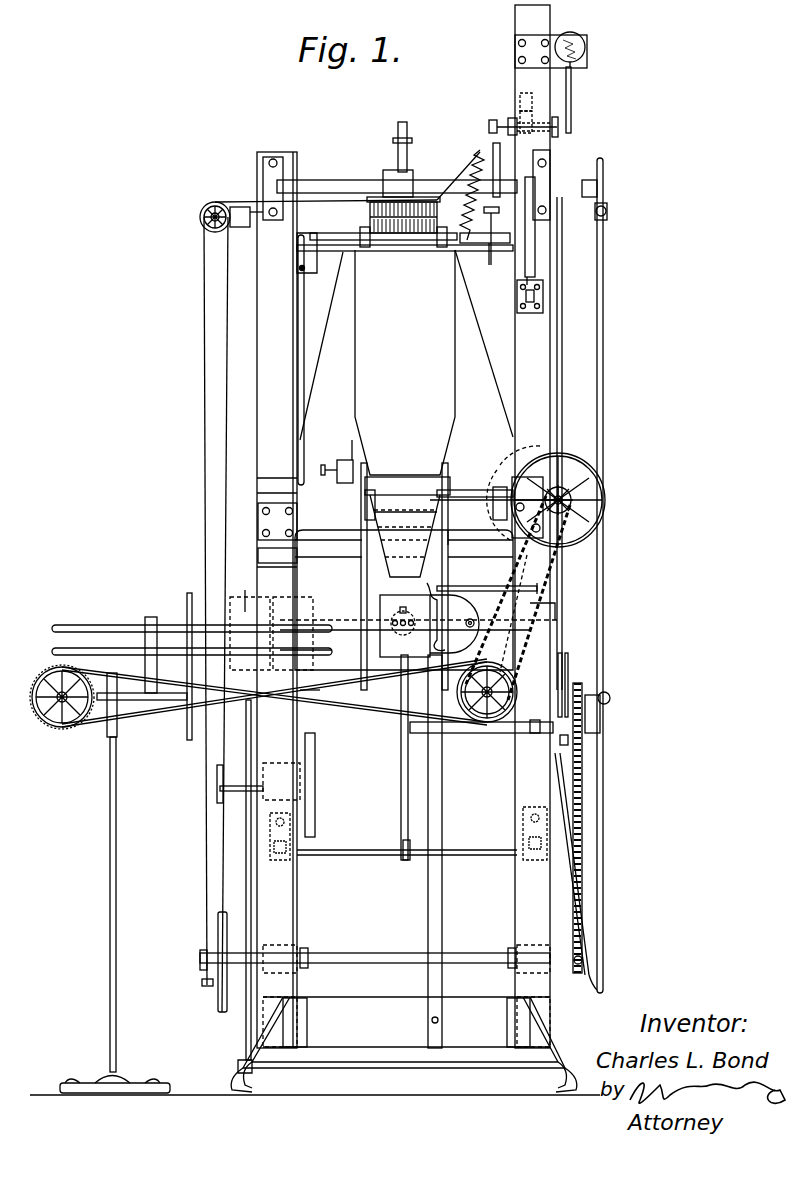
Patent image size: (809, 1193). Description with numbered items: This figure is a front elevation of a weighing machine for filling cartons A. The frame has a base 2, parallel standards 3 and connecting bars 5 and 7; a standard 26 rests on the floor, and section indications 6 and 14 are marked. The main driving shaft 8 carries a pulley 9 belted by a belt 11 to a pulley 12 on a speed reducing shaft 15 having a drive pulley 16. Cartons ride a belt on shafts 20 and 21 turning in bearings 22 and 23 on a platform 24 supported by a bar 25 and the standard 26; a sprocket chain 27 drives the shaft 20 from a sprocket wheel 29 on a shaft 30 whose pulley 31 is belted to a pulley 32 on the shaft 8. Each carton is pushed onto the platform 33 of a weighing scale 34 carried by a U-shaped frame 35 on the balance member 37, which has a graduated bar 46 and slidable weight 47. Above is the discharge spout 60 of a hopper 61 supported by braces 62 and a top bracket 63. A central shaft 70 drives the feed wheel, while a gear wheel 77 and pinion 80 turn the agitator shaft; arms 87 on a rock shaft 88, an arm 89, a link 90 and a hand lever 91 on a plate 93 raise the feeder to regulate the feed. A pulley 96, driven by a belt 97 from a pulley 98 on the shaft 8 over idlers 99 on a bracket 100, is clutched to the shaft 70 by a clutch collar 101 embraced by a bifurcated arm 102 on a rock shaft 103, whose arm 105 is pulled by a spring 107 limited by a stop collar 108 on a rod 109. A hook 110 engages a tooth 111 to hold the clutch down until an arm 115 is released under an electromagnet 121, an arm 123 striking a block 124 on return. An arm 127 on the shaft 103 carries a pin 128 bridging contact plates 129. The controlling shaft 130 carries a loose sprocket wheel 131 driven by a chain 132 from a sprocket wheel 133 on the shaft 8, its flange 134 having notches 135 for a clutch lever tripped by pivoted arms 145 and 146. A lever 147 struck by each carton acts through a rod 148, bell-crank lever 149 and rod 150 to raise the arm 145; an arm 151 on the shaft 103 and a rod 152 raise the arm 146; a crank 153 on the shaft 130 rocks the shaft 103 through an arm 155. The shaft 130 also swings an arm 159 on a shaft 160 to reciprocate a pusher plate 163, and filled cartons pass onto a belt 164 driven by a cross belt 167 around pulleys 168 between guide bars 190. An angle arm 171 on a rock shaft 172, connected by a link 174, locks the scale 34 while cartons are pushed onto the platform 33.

The base 2 is at (365, 1055).
The standards 3 is at (267, 402).
The frame bar 5 is at (295, 521).
The section line 6 is at (240, 470).
The frame bar 7 is at (332, 618).
The main driving shaft 8 is at (382, 957).
The pulley 9 is at (218, 1010).
The belt 11 is at (222, 870).
The pulley 12 is at (218, 790).
The section line 14 is at (192, 573).
The speed reducing shaft 15 is at (240, 795).
The pulley 16 is at (316, 810).
The shaft 20 is at (481, 764).
The shaft 21 is at (55, 724).
The bearing 22 is at (470, 720).
The bearing 23 is at (72, 725).
The platform 24 is at (333, 735).
The bar or bracket 25 is at (443, 822).
The standard 26 is at (110, 889).
The sprocket chain 27 is at (563, 578).
The sprocket wheel 29 is at (572, 500).
The shaft 30 is at (562, 492).
The pulley 31 is at (572, 455).
The pulley 32 is at (600, 930).
The platform 33 is at (345, 712).
The weighing scale 34 is at (364, 544).
The U-shaped frame 35 is at (360, 559).
The balance member 37 is at (450, 475).
The side plate or bar 46 is at (340, 466).
The slidable weight 47 is at (352, 462).
The discharge spout 60 is at (405, 536).
The hopper 61 is at (405, 362).
The braces 62 is at (327, 372).
The top bracket 63 is at (297, 249).
The central shaft 70 is at (400, 153).
The gear wheel 77 is at (370, 213).
The pinion 80 is at (400, 235).
The arms 87 is at (442, 240).
The rock shaft 88 is at (335, 252).
The arm 89 is at (300, 266).
The link or bar 90 is at (299, 306).
The hand lever 91 is at (290, 490).
The plate 93 is at (290, 529).
The pulley 96 is at (434, 200).
The belt 97 is at (225, 340).
The pulley 98 is at (208, 982).
The idlers 99 is at (201, 208).
The bracket 100 is at (247, 212).
The clutch collar 101 is at (390, 187).
The bifurcated arm 102 is at (395, 173).
The rock shaft 103 is at (300, 185).
The arm 105 is at (501, 165).
The spring 107 is at (480, 165).
The stop collar 108 is at (498, 212).
The rod 109 is at (490, 242).
The hook 110 is at (493, 137).
The tooth 111 is at (490, 125).
The arm 115 is at (571, 97).
The electromagnet 121 is at (586, 50).
The arm 123 is at (520, 116).
The block 124 is at (523, 93).
The arm 127 is at (535, 255).
The contact pin 128 is at (533, 283).
The contact plates 129 is at (517, 295).
The controlling shaft 130 is at (484, 724).
The sprocket wheel 131 is at (592, 697).
The chain 132 is at (584, 805).
The sprocket wheel 133 is at (583, 958).
The annular flange 134 is at (568, 752).
The notches 135 is at (572, 740).
The arm 145 is at (566, 668).
The arm 146 is at (570, 680).
The lever 147 is at (362, 656).
The link or rod 148 is at (497, 588).
The bell-crank lever 149 is at (556, 612).
The link or rod 150 is at (560, 633).
The arm 151 is at (600, 193).
The rod 152 is at (563, 312).
The crank 153 is at (600, 715).
The arm 155 is at (607, 208).
The arm 159 is at (383, 606).
The shaft 160 is at (357, 855).
The pusher plate 163 is at (427, 594).
The belt 164 is at (135, 668).
The cross belt 167 is at (167, 716).
The pulleys 168 is at (72, 630).
The angle arm 171 is at (367, 496).
The rock shaft 172 is at (478, 490).
The bar or link 174 is at (512, 548).
The guide bars 190 is at (86, 650).
The cartons or receptacles A is at (285, 600).